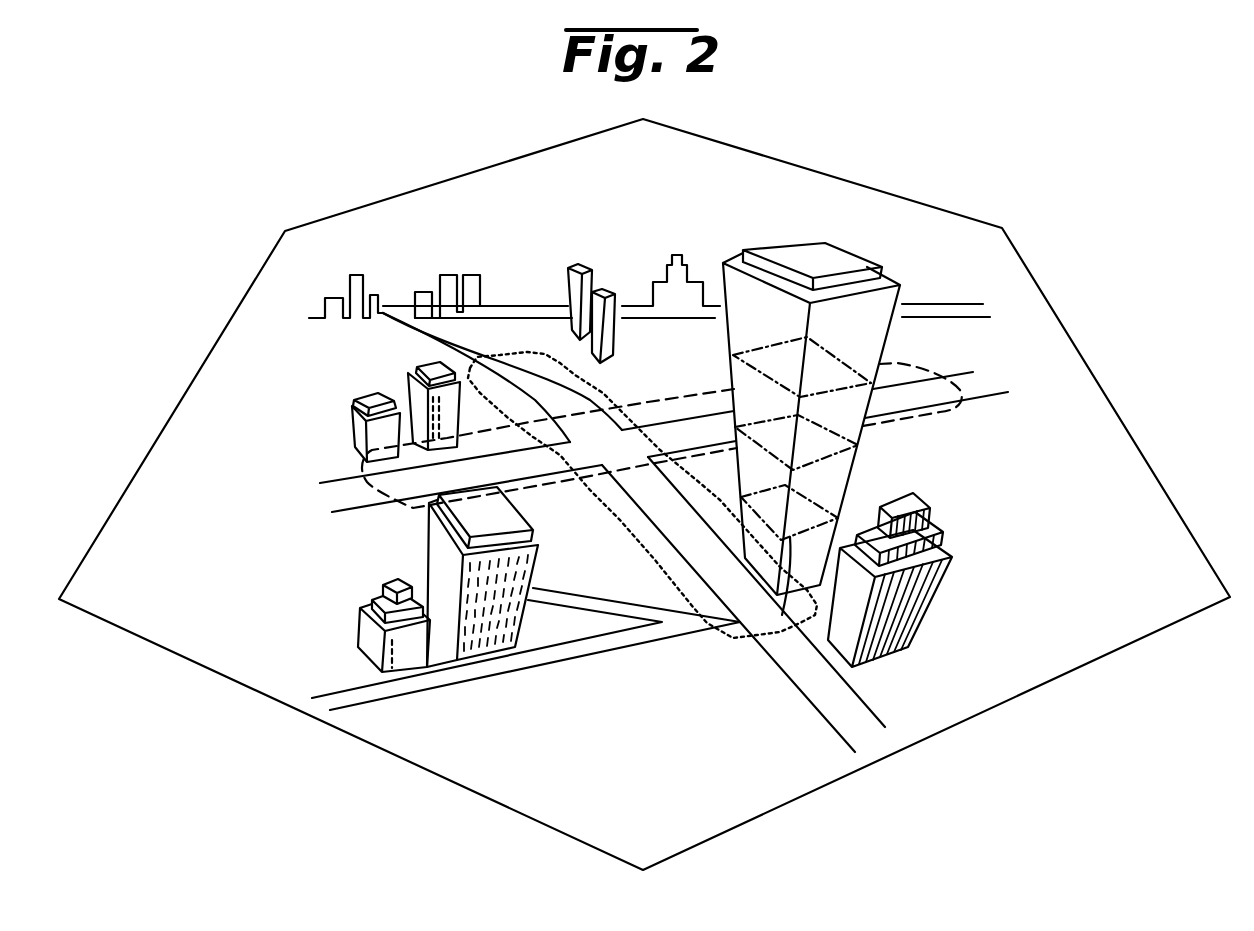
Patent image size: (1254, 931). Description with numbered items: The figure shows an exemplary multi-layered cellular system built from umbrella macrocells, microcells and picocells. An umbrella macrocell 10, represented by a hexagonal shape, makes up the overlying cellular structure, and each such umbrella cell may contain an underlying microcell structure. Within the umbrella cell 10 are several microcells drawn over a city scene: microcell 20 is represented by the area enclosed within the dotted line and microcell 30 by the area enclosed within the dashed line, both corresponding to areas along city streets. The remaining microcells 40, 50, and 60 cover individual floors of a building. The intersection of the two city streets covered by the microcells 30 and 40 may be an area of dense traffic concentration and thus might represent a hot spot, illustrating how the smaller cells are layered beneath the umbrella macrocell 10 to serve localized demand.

The umbrella macrocell 10 is at (428, 773).
The microcell 20 is at (528, 352).
The microcell 30 is at (372, 480).
The microcell 40 is at (882, 367).
The microcell 50 is at (857, 447).
The microcell 60 is at (782, 615).